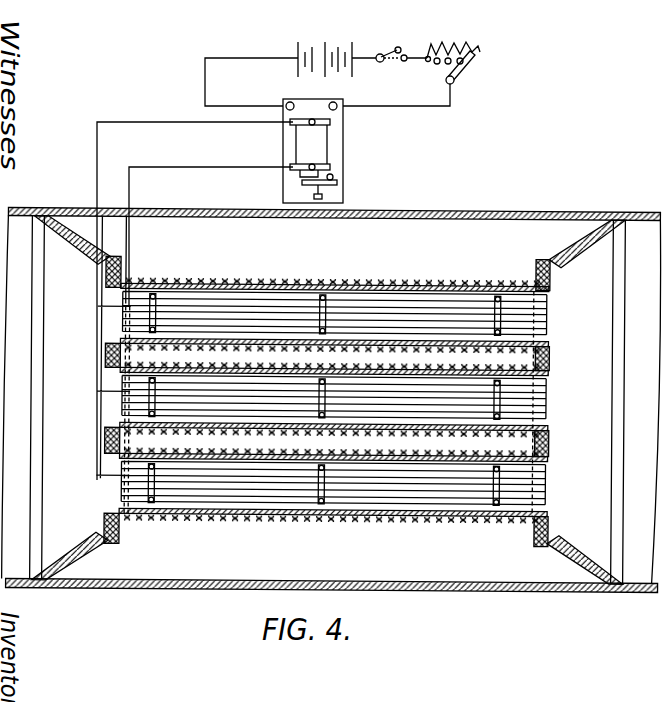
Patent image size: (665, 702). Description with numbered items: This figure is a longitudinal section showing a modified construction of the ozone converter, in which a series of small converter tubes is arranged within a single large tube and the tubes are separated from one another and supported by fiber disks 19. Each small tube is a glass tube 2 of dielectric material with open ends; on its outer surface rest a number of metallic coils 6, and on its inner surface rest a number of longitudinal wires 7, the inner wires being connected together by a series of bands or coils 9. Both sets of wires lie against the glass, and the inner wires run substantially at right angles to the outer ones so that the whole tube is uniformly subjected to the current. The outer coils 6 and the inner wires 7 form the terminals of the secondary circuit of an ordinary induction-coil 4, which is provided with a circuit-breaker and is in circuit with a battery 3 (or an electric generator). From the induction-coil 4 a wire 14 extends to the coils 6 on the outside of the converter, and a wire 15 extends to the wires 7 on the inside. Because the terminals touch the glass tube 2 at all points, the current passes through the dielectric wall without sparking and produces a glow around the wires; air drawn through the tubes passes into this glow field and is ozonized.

The glass tube 2 is at (282, 283).
The battery 3 is at (325, 42).
The induction-coil 4 is at (313, 147).
The metallic coils 6 is at (233, 287).
The longitudinal wires 7 is at (195, 295).
The bands or coils 9 is at (157, 295).
The wire 14 is at (132, 186).
The wire 15 is at (96, 186).
The fiber disks 19 is at (124, 272).